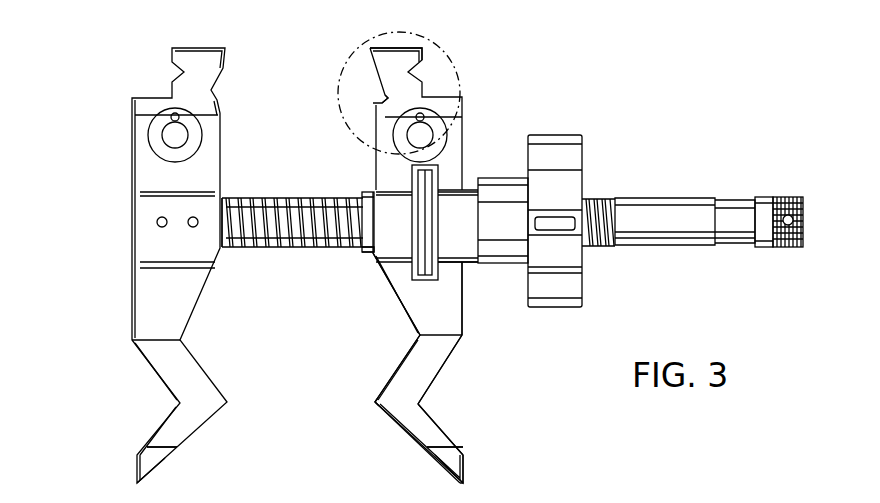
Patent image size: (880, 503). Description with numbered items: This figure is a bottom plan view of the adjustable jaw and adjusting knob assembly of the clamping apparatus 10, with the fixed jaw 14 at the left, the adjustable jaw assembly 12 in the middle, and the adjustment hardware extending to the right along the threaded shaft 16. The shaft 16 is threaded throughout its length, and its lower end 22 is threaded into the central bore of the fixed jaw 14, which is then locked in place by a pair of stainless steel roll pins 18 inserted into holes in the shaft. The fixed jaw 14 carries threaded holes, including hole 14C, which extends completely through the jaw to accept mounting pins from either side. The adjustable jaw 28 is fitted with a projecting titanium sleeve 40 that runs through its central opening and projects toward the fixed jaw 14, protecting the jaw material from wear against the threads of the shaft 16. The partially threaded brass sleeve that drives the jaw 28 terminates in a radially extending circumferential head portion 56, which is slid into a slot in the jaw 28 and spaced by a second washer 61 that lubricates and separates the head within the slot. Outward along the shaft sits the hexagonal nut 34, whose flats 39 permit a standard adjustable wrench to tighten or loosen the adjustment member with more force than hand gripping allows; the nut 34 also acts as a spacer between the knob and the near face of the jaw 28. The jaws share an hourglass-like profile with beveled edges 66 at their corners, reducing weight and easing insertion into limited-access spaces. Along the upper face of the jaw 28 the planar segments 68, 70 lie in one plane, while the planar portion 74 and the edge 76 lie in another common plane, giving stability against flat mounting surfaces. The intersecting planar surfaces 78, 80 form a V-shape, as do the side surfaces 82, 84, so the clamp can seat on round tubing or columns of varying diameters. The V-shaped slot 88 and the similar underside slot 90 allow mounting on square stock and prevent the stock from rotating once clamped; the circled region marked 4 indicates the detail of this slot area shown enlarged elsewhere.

The clamping apparatus 10 is at (603, 57).
The adjustable jaw assembly 12 is at (510, 450).
The fixed jaw 14 is at (155, 375).
The threaded hole 14C is at (172, 137).
The threaded shaft 16 is at (248, 247).
The roll pins 18 is at (191, 219).
The lower end 22 is at (223, 197).
The adjustable jaw 28 is at (402, 432).
The hexagonal nut 34 is at (513, 178).
The flats 39 is at (490, 225).
The projecting sleeve 40 is at (365, 254).
The detail circle for FIG. 4 is at (399, 93).
The circumferential head portion 56 is at (440, 185).
The second washer 61 is at (373, 65).
The beveled edges 66 is at (153, 460).
The planar segment 68 is at (465, 467).
The planar segment 70 is at (465, 302).
The planar portion 74 is at (368, 182).
The edge 76 is at (374, 402).
The intersecting planar surface 78 is at (392, 373).
The intersecting planar surface 80 is at (397, 300).
The intersecting planar surface 82 is at (442, 427).
The intersecting planar surface 84 is at (442, 375).
The V-shaped slot 88 is at (422, 72).
The V-shaped slot 90 is at (385, 100).